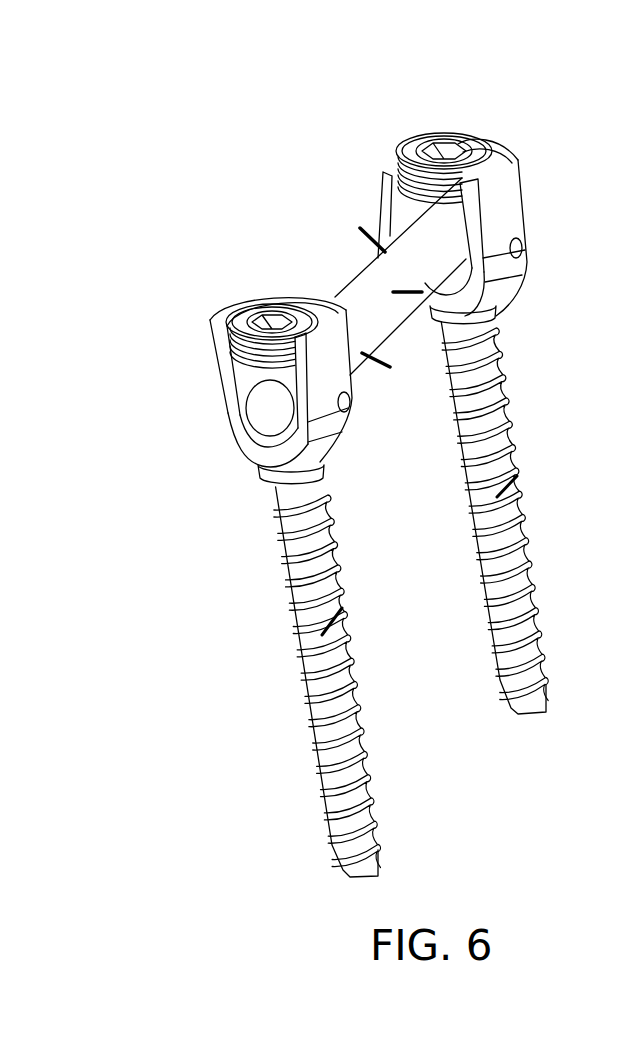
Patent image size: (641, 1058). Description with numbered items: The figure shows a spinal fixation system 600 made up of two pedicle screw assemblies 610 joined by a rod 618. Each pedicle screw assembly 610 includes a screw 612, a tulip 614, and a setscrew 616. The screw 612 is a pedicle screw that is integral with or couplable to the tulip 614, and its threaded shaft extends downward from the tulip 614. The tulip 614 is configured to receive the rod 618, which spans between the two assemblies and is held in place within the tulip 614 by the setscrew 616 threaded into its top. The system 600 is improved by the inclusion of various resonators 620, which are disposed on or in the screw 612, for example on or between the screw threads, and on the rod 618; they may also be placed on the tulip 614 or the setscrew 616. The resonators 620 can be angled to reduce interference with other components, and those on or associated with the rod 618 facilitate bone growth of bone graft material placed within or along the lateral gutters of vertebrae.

The spinal fixation system 600 is at (200, 153).
The pedicle screw assembly 610 is at (402, 126).
The screw 612 is at (467, 510).
The tulip 614 is at (520, 193).
The setscrew 616 is at (468, 140).
The rod 618 is at (337, 294).
The resonator 620 is at (362, 225).